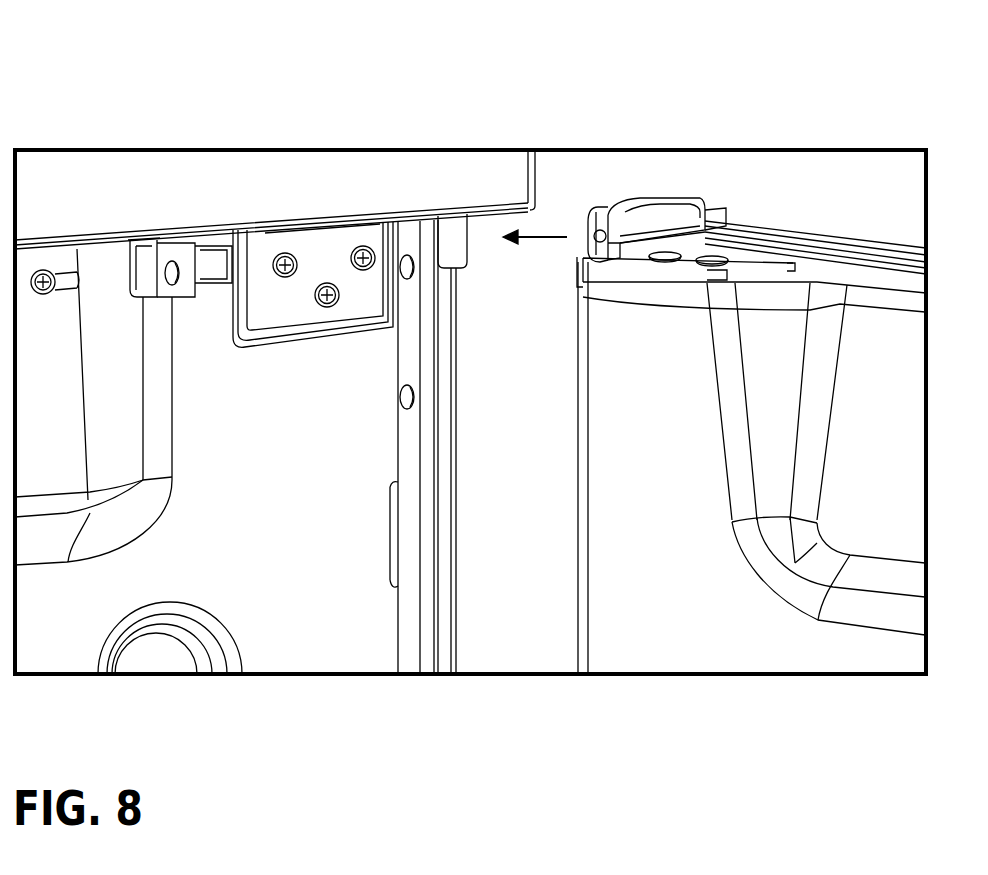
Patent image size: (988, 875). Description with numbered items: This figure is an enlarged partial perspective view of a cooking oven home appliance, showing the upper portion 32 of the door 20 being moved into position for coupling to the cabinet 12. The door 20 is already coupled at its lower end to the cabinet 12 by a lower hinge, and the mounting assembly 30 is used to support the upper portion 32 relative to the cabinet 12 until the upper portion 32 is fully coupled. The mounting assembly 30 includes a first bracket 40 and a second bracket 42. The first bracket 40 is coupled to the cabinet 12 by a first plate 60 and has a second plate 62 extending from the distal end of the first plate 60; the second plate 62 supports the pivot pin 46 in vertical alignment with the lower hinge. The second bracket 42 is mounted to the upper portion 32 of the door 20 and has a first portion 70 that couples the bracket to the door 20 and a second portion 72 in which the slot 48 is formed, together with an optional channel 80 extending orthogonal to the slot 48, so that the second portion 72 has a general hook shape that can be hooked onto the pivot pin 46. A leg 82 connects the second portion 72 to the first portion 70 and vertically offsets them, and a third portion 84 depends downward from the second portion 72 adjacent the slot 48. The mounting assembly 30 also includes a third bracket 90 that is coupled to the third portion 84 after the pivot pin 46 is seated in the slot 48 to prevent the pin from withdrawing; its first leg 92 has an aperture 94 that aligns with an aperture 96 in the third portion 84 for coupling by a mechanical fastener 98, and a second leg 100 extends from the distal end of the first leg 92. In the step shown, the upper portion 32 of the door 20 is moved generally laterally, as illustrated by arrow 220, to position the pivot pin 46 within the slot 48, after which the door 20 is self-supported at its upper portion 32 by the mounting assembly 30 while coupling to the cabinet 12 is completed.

The cabinet 12 is at (310, 610).
The door 20 is at (698, 598).
The mounting assembly 30 is at (665, 196).
The upper portion of the door 32 is at (875, 248).
The first bracket 40 is at (313, 239).
The second bracket 42 is at (717, 349).
The pivot pin 46 is at (458, 247).
The slot 48 is at (608, 188).
The first plate 60 is at (331, 250).
The second plate 62 is at (452, 222).
The first portion 70 is at (697, 263).
The second portion 72 is at (692, 220).
The channel 80 is at (666, 191).
The leg 82 is at (712, 213).
The third portion 84 is at (582, 207).
The third bracket 90 is at (150, 226).
The first leg 92 is at (126, 238).
The aperture 94 is at (176, 244).
The aperture 96 is at (598, 241).
The mechanical fastener 98 is at (44, 268).
The second leg 100 is at (222, 257).
The arrow 220 is at (556, 237).